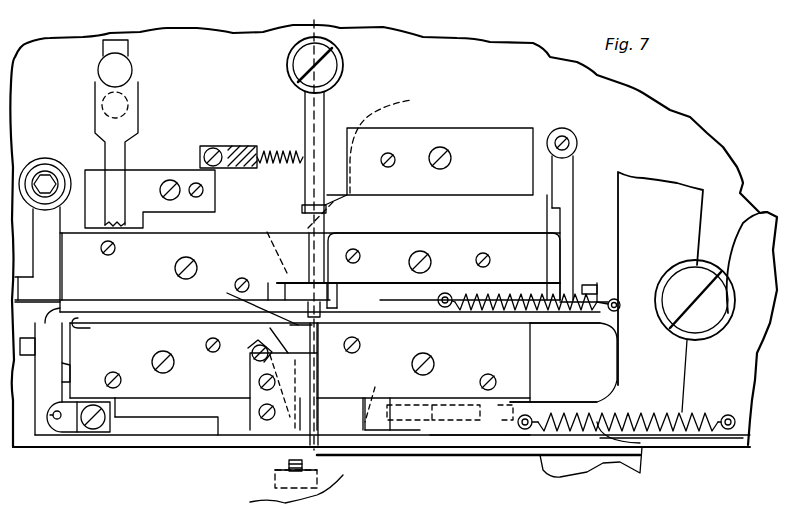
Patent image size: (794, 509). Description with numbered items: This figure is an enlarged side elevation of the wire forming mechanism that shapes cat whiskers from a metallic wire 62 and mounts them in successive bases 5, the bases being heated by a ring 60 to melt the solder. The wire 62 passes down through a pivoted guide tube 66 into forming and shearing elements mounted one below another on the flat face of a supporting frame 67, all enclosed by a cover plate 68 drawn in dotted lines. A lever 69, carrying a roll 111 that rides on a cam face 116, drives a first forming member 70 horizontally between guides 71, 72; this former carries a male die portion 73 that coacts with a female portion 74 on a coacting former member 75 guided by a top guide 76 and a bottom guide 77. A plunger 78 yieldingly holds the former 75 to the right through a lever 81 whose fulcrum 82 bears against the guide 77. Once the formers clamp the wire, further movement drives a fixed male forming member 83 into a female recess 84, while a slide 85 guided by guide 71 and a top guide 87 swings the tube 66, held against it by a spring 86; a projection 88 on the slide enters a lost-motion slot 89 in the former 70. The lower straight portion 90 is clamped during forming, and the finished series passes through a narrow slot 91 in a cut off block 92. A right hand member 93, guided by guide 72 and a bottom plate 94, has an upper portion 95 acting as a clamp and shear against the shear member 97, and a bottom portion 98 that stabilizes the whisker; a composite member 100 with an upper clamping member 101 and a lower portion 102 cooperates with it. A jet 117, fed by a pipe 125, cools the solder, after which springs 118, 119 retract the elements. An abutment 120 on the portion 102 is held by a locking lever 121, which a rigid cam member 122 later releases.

The base 5 is at (300, 467).
The ring 60 is at (253, 492).
The metallic wire 62 is at (313, 27).
The pivoted guide tube 66 is at (322, 105).
The supporting frame 67 is at (667, 133).
The cover plate 68 is at (412, 100).
The lever 69 is at (687, 212).
The first forming member 70 is at (375, 305).
The guide 71 is at (467, 242).
The guide 72 is at (510, 338).
The male die portion 73 is at (348, 312).
The female portion 74 is at (380, 303).
The coacting former member 75 is at (122, 315).
The top guide 76 is at (210, 245).
The bottom guide 77 is at (137, 378).
The plunger 78 is at (67, 347).
The lever 81 is at (57, 297).
The fulcrum 82 is at (67, 380).
The fixed male forming member 83 is at (265, 232).
The female recess 84 is at (330, 238).
The slide 85 is at (467, 207).
The spring 86 is at (268, 147).
The top guide 87 is at (442, 137).
The downwardly directed projection 88 is at (570, 275).
The slot 89 is at (610, 290).
The lower straight portion 90 is at (370, 327).
The narrow slot 91 is at (263, 363).
The cut off block 92 is at (317, 360).
The right hand member 93 is at (430, 433).
The bottom plate 94 is at (638, 453).
The upper portion 95 is at (410, 420).
The shear member 97 is at (317, 392).
The bottom portion 98 is at (367, 433).
The composite member 100 is at (150, 417).
The upper clamping member 101 is at (200, 407).
The lower portion 102 is at (210, 435).
The roll 111 is at (698, 263).
The cam face 116 is at (737, 330).
The jet 117 is at (377, 387).
The spring 118 is at (707, 403).
The spring 119 is at (500, 245).
The abutment 120 is at (103, 430).
The locking lever 121 is at (117, 155).
The rigid cam member 122 is at (125, 63).
The pipe 125 is at (450, 397).